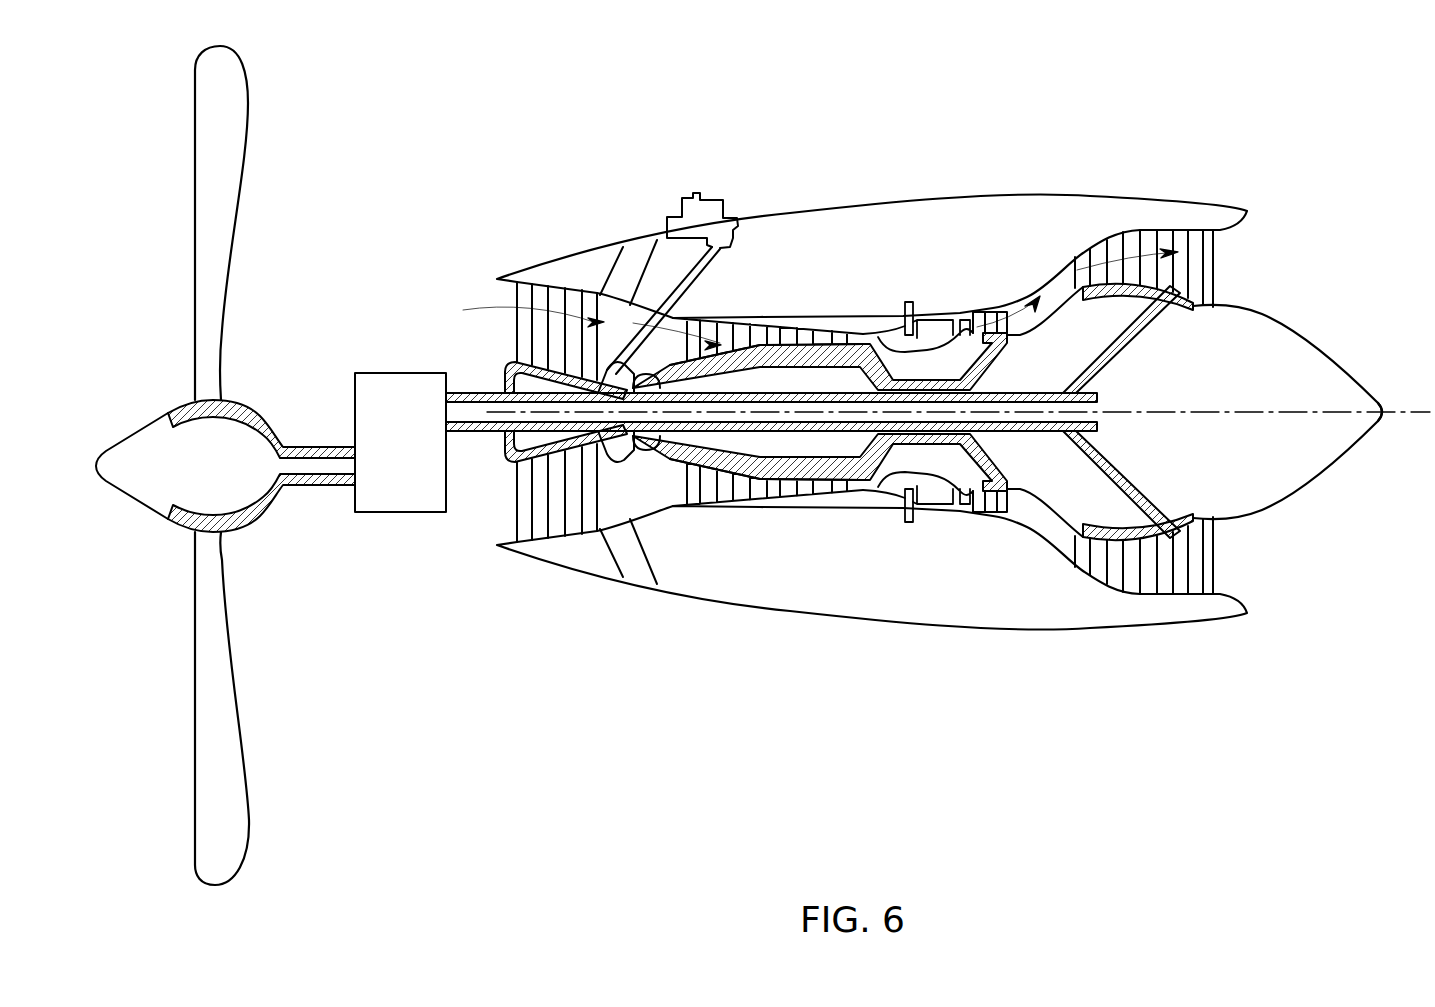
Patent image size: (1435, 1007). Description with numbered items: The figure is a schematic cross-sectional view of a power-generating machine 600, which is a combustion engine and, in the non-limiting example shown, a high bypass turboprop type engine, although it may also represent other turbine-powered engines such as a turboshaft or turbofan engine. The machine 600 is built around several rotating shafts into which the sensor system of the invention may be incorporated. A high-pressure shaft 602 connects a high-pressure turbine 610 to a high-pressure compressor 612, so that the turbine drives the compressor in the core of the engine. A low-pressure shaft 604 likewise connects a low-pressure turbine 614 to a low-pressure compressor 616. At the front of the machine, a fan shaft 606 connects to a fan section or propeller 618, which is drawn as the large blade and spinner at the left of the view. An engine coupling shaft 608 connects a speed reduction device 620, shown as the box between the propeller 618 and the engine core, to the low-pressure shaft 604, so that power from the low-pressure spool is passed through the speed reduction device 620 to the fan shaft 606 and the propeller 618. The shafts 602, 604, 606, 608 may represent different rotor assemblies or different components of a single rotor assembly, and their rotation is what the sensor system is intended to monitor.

The power-generating machine 600 is at (1033, 137).
The high-pressure shaft 602 is at (948, 380).
The low-pressure shaft 604 is at (1072, 390).
The fan shaft 606 is at (318, 446).
The engine coupling shaft 608 is at (478, 392).
The high-pressure turbine 610 is at (1011, 504).
The high-pressure compressor 612 is at (691, 486).
The low-pressure turbine 614 is at (1193, 581).
The low-pressure compressor 616 is at (557, 523).
The propeller 618 is at (180, 132).
The speed reduction device 620 is at (388, 372).